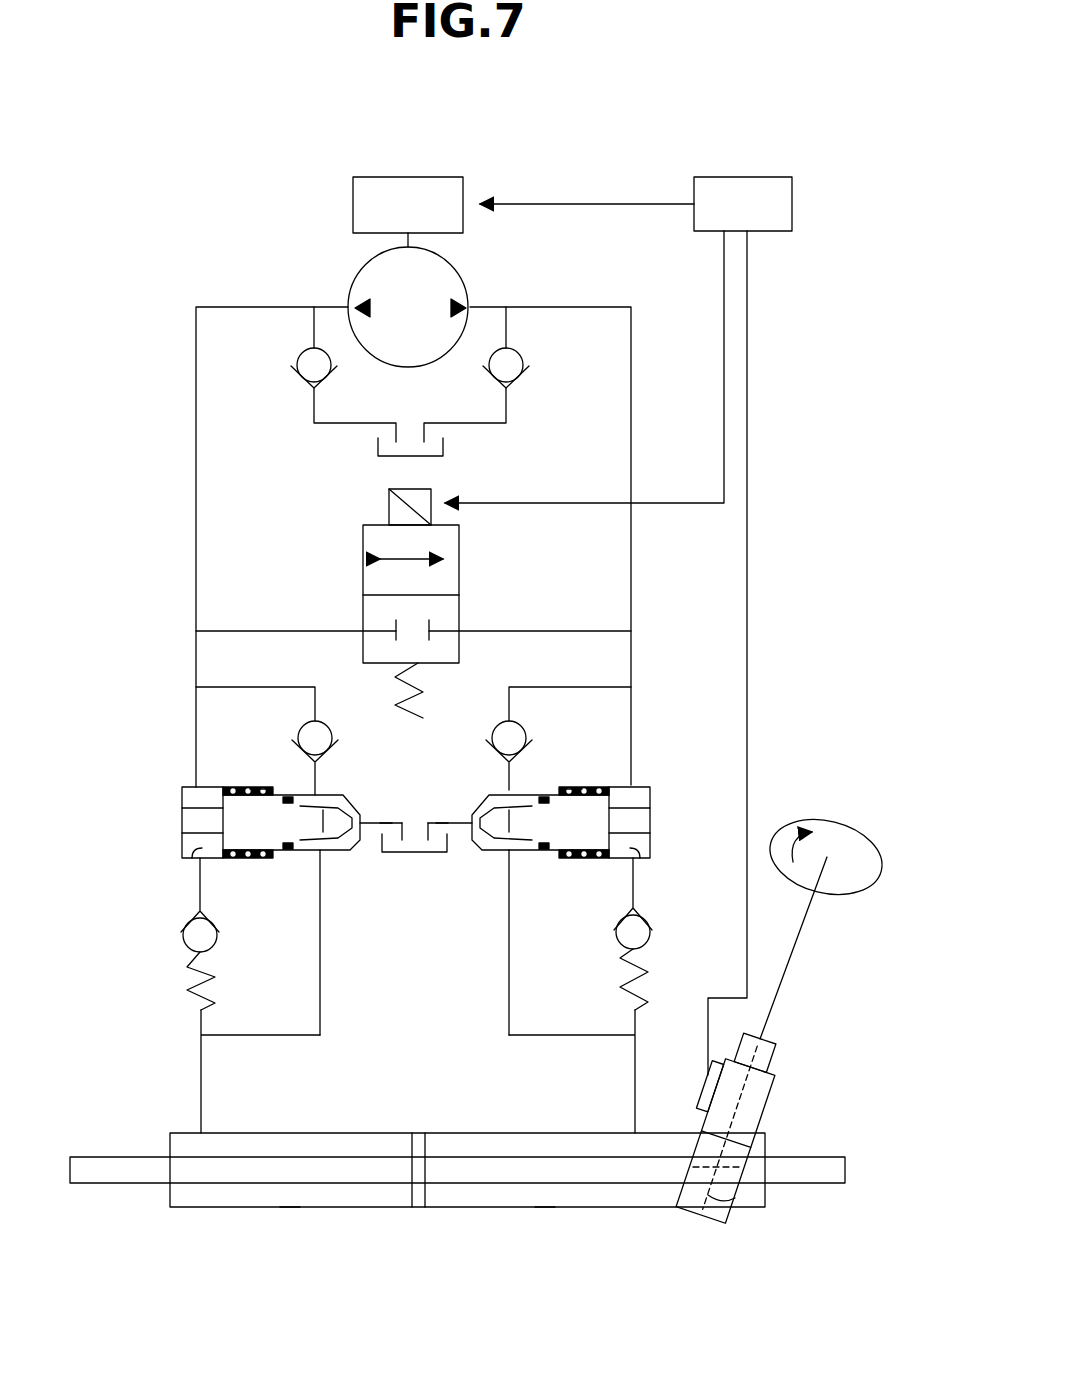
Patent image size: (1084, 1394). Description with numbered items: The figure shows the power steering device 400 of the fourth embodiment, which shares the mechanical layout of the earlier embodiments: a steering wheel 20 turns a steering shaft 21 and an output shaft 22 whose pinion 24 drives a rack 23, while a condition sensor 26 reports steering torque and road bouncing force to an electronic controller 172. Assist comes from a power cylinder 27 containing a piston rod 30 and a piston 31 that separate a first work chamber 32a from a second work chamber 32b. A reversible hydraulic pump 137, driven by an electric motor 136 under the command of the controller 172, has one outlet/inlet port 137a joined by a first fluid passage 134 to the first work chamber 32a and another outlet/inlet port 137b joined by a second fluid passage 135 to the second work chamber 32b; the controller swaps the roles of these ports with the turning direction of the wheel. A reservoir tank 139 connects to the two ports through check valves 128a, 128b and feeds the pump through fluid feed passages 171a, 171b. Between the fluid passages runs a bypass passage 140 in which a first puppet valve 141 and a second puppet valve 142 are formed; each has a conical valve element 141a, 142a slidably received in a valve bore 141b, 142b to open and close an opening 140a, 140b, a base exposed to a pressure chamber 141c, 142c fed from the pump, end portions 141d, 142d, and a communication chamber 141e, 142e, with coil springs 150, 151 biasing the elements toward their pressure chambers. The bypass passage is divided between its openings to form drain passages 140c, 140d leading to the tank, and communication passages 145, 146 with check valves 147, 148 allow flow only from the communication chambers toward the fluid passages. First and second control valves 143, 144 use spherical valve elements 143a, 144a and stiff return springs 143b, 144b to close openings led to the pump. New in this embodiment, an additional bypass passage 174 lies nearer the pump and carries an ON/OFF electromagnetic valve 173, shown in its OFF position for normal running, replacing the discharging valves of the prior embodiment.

The power steering device 400 is at (582, 121).
The electric motor 136 is at (408, 177).
The electronic controller 172 is at (730, 177).
The reversible hydraulic pump 137 is at (357, 272).
The outlet/inlet port 137a is at (350, 302).
The outlet/inlet port 137b is at (468, 302).
The check valve 128a is at (298, 358).
The check valve 128b is at (522, 356).
The first fluid passage 134 is at (196, 400).
The second fluid passage 135 is at (631, 555).
The fluid feed passage 171a is at (316, 404).
The fluid feed passage 171b is at (508, 404).
The reservoir tank 139 is at (410, 457).
The electromagnetic valve 173 is at (358, 572).
The additional bypass passage 174 is at (537, 631).
The first communication passage 145 is at (247, 687).
The second communication passage 146 is at (570, 687).
The check valve 147 is at (333, 726).
The check valve 148 is at (492, 726).
The coil spring 150 is at (258, 787).
The coil spring 151 is at (580, 787).
The first puppet valve 141 is at (232, 782).
The valve element 141a is at (307, 822).
The valve bore 141b is at (333, 853).
The pressure chamber 141c is at (182, 848).
The port 141d is at (222, 808).
The communication chamber 141e is at (338, 852).
The second puppet valve 142 is at (602, 782).
The valve element 142a is at (523, 822).
The valve bore 142b is at (497, 853).
The pressure chamber 142c is at (650, 845).
The port 142d is at (650, 808).
The communication chamber 142e is at (488, 852).
The bypass passage 140 is at (321, 958).
The opening 140a is at (370, 822).
The opening 140b is at (460, 822).
The drain passage 140c is at (386, 822).
The drain passage 140d is at (442, 822).
The first control valve 143 is at (192, 934).
The spherical valve element 143a is at (183, 932).
The return spring 143b is at (190, 995).
The second control valve 144 is at (645, 934).
The spherical valve element 144a is at (650, 932).
The return spring 144b is at (648, 970).
The steering wheel 20 is at (868, 838).
The steering shaft 21 is at (798, 948).
The output shaft 22 is at (745, 1110).
The rack 23 is at (740, 1175).
The pinion 24 is at (708, 1205).
The condition sensor 26 is at (698, 1100).
The power cylinder 27 is at (600, 1207).
The piston rod 30 is at (218, 1172).
The piston 31 is at (428, 1190).
The first work chamber 32a is at (290, 1207).
The second work chamber 32b is at (545, 1207).